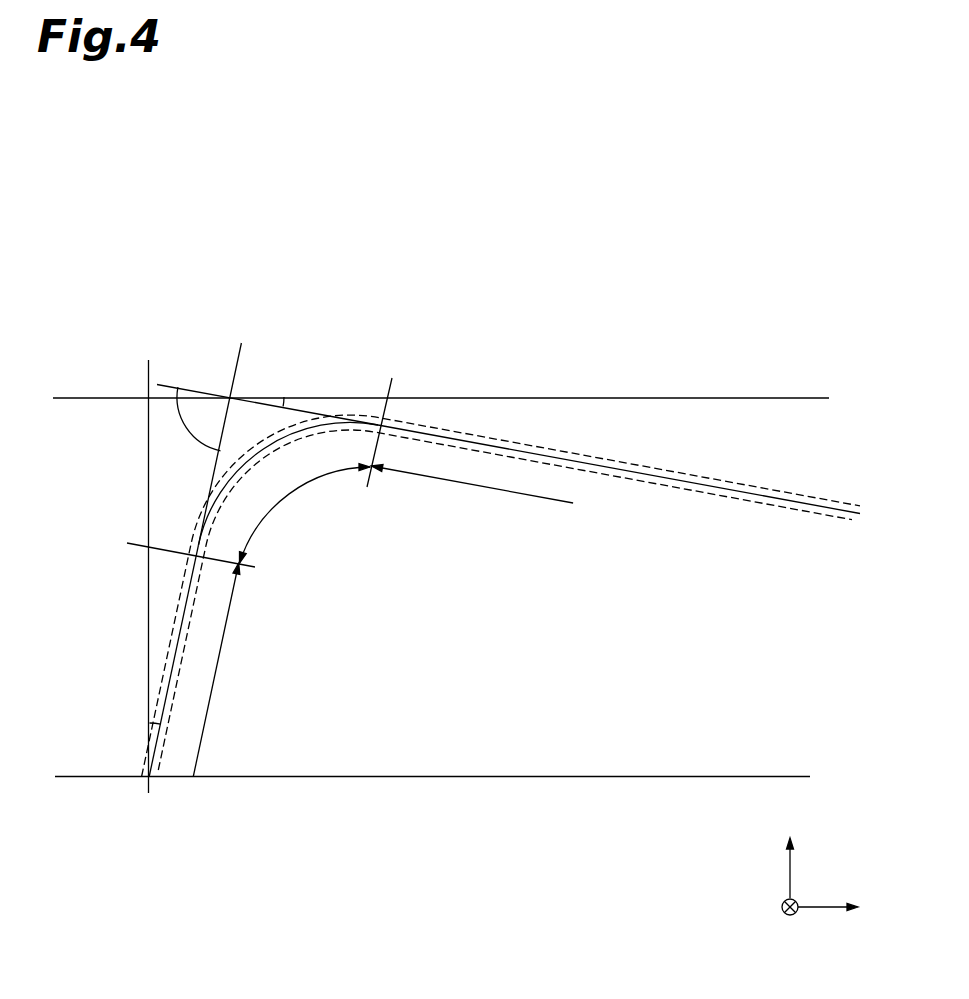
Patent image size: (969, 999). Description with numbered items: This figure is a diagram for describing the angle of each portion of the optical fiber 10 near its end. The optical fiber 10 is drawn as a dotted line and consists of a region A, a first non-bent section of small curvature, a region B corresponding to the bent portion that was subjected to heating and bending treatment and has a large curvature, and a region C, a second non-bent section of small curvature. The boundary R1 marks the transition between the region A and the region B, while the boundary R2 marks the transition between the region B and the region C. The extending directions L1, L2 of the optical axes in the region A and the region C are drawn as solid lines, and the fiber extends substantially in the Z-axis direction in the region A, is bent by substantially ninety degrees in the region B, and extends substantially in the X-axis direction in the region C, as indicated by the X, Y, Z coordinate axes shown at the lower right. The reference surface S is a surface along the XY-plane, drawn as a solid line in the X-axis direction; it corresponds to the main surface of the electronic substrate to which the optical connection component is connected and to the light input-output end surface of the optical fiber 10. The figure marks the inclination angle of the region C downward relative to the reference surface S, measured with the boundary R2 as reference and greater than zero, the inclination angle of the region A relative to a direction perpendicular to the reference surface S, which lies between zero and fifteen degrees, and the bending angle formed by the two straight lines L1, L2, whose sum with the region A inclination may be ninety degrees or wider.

The optical fiber 10 is at (758, 485).
The extending direction of the optical axis in region A L1 is at (180, 621).
The extending direction of the optical axis in region C L2 is at (675, 475).
The reference surface S is at (582, 776).
The region A is at (210, 697).
The region B is at (283, 500).
The region C is at (497, 489).
The boundary R1 is at (172, 547).
The boundary R2 is at (387, 418).
The X-axis X is at (840, 909).
The Y-axis Y is at (778, 923).
The Z-axis Z is at (789, 854).